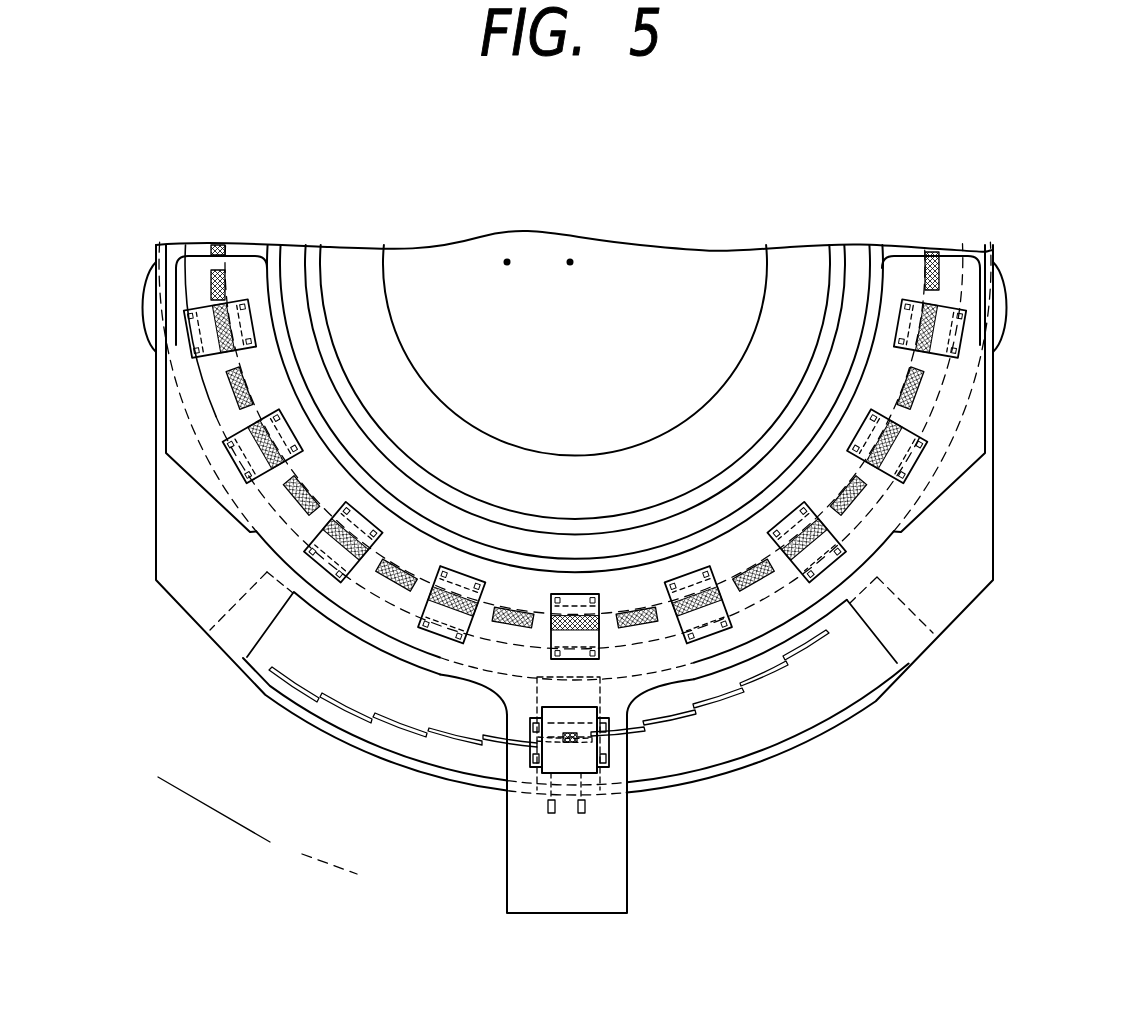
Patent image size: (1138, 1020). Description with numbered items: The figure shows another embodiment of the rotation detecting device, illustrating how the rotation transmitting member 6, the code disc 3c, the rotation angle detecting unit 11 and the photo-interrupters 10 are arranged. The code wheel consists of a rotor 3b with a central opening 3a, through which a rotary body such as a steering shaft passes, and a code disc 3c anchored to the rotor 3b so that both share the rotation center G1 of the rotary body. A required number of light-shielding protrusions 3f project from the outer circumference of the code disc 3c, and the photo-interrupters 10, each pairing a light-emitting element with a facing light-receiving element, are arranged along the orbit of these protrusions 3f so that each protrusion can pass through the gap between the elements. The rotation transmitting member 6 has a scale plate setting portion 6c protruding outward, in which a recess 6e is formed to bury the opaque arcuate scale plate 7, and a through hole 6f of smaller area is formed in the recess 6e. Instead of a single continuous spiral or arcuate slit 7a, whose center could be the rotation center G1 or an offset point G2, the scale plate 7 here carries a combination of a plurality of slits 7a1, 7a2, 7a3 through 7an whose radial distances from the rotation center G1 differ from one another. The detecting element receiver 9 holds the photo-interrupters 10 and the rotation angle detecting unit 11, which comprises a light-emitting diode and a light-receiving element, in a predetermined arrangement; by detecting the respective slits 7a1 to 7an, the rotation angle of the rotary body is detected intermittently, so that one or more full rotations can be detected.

The central opening 3a is at (632, 268).
The rotor 3b is at (795, 267).
The code disc 3c is at (955, 388).
The light-shielding protrusions 3f is at (228, 262).
The rotation transmitting member 6 is at (1004, 454).
The scale plate setting portion 6c is at (957, 602).
The recess 6e is at (900, 603).
The through hole 6f is at (852, 608).
The scale plate 7 is at (462, 757).
The slit 7a is at (257, 833).
The first slit 7a1 is at (268, 699).
The second slit 7a2 is at (340, 712).
The third slit 7a3 is at (400, 730).
The n-th slit 7an is at (818, 640).
The detecting element receiver 9 is at (900, 277).
The photo-interrupter 10 is at (236, 300).
The rotation angle detecting unit 11 is at (575, 755).
The rotation center G1 is at (572, 285).
The offset center point G2 is at (503, 285).